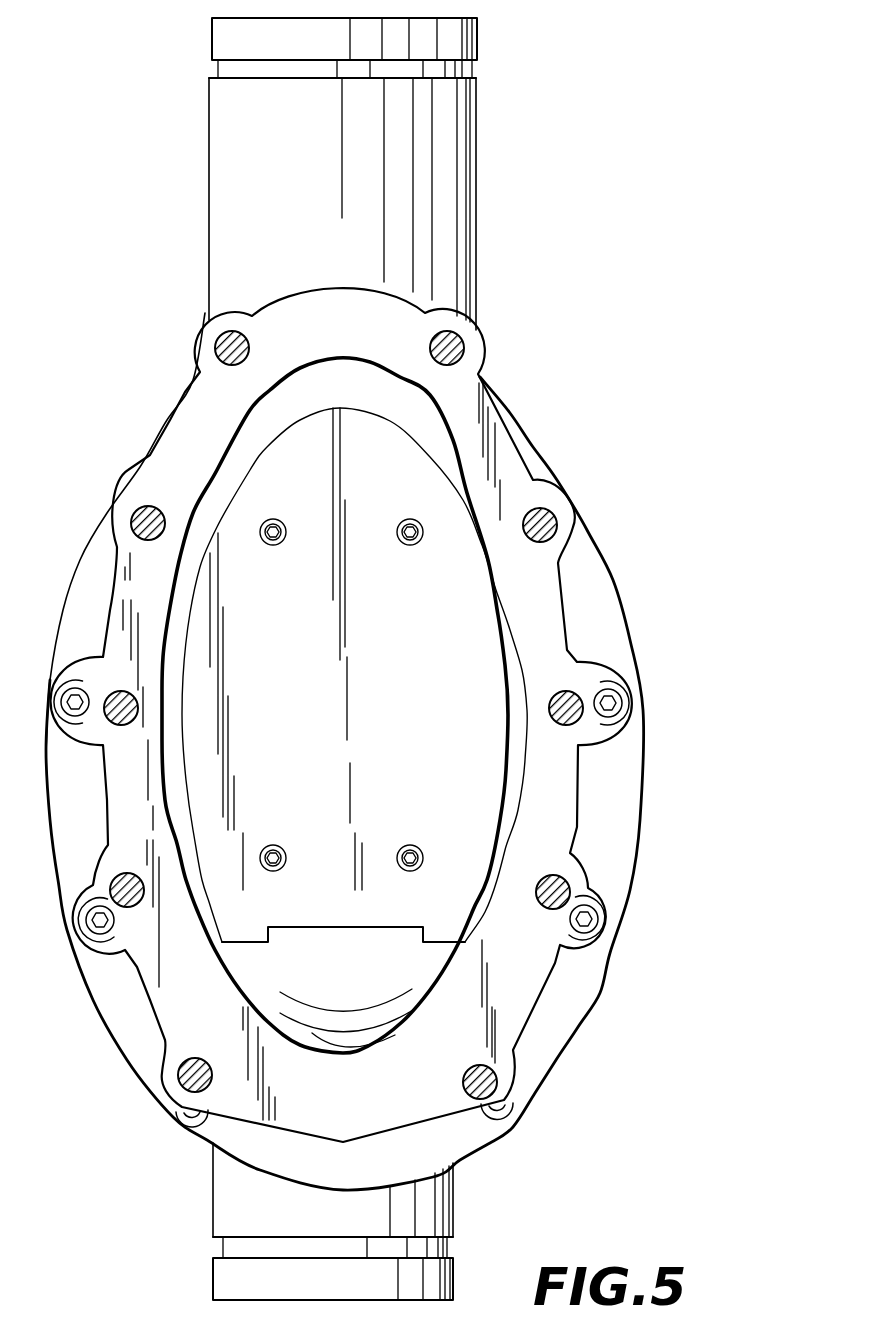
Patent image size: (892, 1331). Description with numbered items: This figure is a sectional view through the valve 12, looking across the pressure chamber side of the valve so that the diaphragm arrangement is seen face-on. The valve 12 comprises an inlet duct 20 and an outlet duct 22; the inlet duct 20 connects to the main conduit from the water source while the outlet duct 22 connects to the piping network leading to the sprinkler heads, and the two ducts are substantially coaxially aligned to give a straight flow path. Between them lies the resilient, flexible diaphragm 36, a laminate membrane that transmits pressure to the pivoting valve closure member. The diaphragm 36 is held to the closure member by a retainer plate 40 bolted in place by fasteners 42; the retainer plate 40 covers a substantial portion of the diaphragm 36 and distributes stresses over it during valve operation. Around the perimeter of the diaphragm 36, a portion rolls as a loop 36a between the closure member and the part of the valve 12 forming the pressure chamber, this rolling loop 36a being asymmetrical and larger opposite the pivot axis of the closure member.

The valve 12 is at (660, 624).
The inlet duct 20 is at (223, 1208).
The outlet duct 22 is at (222, 182).
The diaphragm 36 is at (463, 468).
The rolling loop 36a is at (413, 410).
The retainer plate 40 is at (423, 623).
The fasteners 42 is at (412, 855).